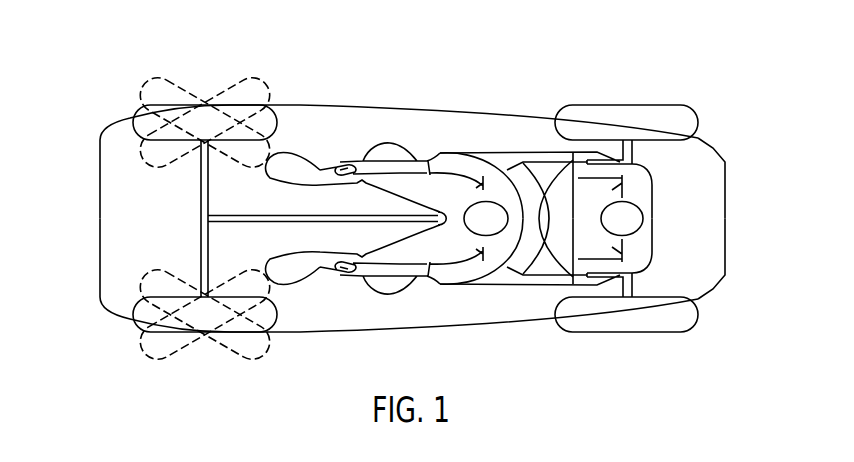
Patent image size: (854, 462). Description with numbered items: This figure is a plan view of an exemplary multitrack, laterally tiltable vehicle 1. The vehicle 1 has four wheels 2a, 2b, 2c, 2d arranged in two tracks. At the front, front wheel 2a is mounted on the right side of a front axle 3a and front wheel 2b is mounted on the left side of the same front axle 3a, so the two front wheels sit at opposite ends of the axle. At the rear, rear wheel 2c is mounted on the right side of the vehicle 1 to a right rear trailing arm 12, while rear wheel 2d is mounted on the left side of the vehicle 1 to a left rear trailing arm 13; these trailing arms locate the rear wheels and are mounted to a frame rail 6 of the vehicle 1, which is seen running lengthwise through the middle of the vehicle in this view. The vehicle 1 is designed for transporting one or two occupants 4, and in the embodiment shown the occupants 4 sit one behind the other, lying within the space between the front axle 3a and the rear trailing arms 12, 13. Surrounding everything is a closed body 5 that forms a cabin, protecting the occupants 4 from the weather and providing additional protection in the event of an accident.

The vehicle 1 is at (118, 46).
The front wheel 2a is at (210, 117).
The front wheel 2b is at (206, 320).
The rear wheel 2c is at (628, 115).
The rear wheel 2d is at (628, 322).
The front axle 3a is at (200, 215).
The occupant 4 is at (642, 252).
The closed body 5 is at (728, 194).
The frame rail 6 is at (270, 213).
The right rear trailing arm 12 is at (600, 152).
The left rear trailing arm 13 is at (600, 284).